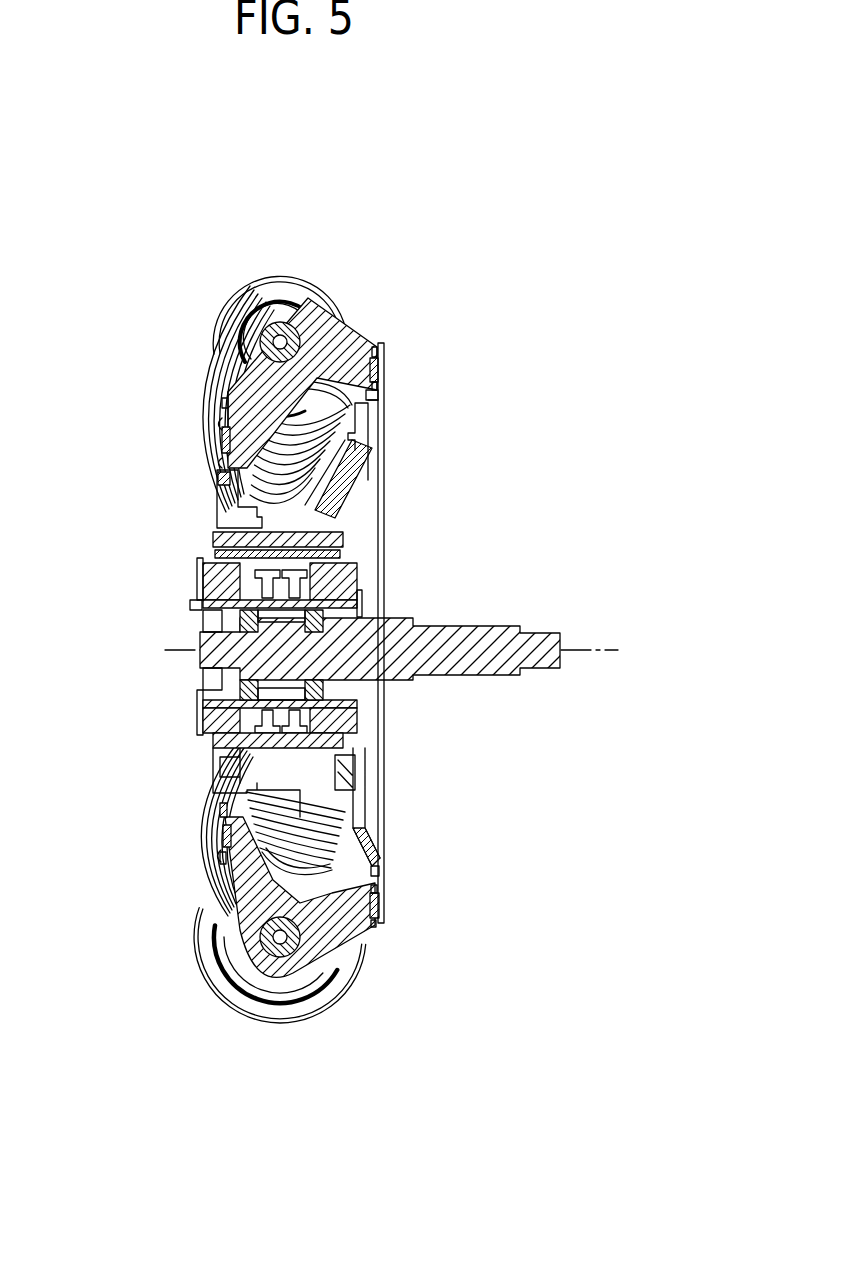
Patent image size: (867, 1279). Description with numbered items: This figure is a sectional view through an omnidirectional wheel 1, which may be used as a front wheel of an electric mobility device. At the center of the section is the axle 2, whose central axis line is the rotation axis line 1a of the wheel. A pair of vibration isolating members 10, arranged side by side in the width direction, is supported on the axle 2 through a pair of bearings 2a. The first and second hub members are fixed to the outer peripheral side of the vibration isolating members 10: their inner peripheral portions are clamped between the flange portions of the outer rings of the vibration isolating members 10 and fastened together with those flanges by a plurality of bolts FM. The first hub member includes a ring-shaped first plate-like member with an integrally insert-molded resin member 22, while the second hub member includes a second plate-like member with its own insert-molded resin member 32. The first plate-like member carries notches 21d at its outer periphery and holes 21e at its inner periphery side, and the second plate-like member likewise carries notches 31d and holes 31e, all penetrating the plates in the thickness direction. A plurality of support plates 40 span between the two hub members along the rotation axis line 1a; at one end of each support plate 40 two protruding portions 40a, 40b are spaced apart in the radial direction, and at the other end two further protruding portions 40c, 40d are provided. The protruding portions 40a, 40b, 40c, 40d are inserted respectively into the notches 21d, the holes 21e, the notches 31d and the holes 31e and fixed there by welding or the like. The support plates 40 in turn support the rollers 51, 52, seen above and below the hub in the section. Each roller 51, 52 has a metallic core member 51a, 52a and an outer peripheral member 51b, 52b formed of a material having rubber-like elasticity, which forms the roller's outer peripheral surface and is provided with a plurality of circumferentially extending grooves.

The omnidirectional wheel 1 is at (238, 292).
The rotation axis line 1a is at (606, 650).
The axle 2 is at (493, 681).
The bearings 2a is at (240, 683).
The vibration isolating members 10 is at (207, 590).
The bolts (fastening members) FM is at (352, 555).
The notches 21d is at (378, 362).
The holes 21e is at (378, 392).
The resin member 22 is at (357, 450).
The notches 31d is at (228, 423).
The holes 31e is at (227, 463).
The resin member 32 is at (216, 498).
The support plates 40 is at (364, 344).
The protruding portion 40a is at (378, 350).
The protruding portion 40b is at (378, 387).
The protruding portion 40c is at (226, 405).
The protruding portion 40d is at (227, 455).
The roller 51 is at (330, 300).
The metallic core member 51a is at (297, 313).
The outer peripheral member 51b is at (283, 290).
The roller 52 is at (300, 1025).
The metallic core member 52a is at (267, 992).
The outer peripheral member 52b is at (217, 983).